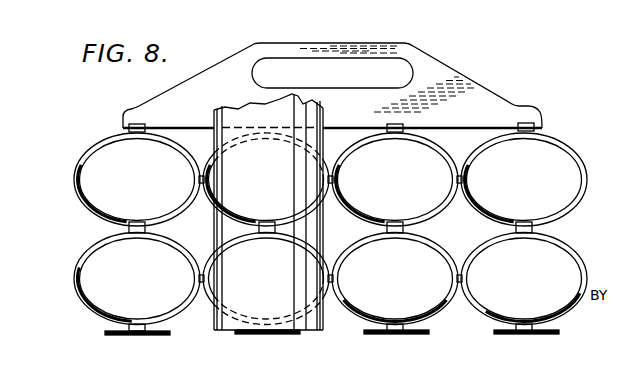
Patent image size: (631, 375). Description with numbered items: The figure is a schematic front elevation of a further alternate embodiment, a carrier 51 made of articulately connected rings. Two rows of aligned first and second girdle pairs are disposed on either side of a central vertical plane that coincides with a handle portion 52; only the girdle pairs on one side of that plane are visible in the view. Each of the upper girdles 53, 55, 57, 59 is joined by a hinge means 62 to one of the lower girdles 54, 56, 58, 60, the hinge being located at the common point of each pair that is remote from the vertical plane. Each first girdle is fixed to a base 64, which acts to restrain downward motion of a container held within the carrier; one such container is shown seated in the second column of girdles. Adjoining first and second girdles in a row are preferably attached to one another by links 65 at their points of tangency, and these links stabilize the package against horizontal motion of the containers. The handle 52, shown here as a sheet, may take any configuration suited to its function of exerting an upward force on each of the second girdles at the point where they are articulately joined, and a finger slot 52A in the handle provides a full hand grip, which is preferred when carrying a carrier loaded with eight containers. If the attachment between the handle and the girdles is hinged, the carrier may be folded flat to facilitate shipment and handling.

The carrier 51 is at (440, 85).
The handle portion 52 is at (245, 64).
The finger slot 52A is at (331, 66).
The upper girdle 53 is at (98, 133).
The lower girdle 54 is at (97, 318).
The upper girdle 55 is at (205, 160).
The lower girdle 56 is at (332, 296).
The upper girdle 57 is at (463, 115).
The lower girdle 58 is at (440, 315).
The upper girdle 59 is at (558, 137).
The lower girdle 60 is at (565, 318).
The hinge means 62 is at (135, 222).
The base 64 is at (152, 337).
The link 65 is at (332, 163).